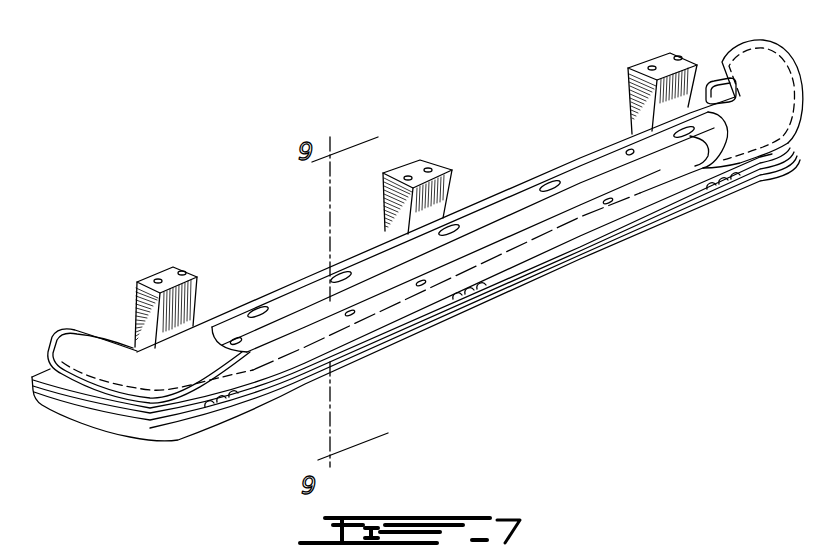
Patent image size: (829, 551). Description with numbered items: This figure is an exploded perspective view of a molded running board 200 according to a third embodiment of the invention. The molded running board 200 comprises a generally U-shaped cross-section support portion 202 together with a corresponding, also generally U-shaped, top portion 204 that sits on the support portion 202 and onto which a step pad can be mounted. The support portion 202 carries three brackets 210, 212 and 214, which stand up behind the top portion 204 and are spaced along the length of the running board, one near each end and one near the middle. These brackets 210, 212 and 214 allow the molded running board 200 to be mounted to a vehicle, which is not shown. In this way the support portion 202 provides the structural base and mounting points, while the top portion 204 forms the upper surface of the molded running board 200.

The molded running board 200 is at (236, 137).
The support portion 202 is at (628, 235).
The top portion 204 is at (93, 351).
The bracket 210 is at (200, 298).
The bracket 212 is at (435, 191).
The bracket 214 is at (678, 90).